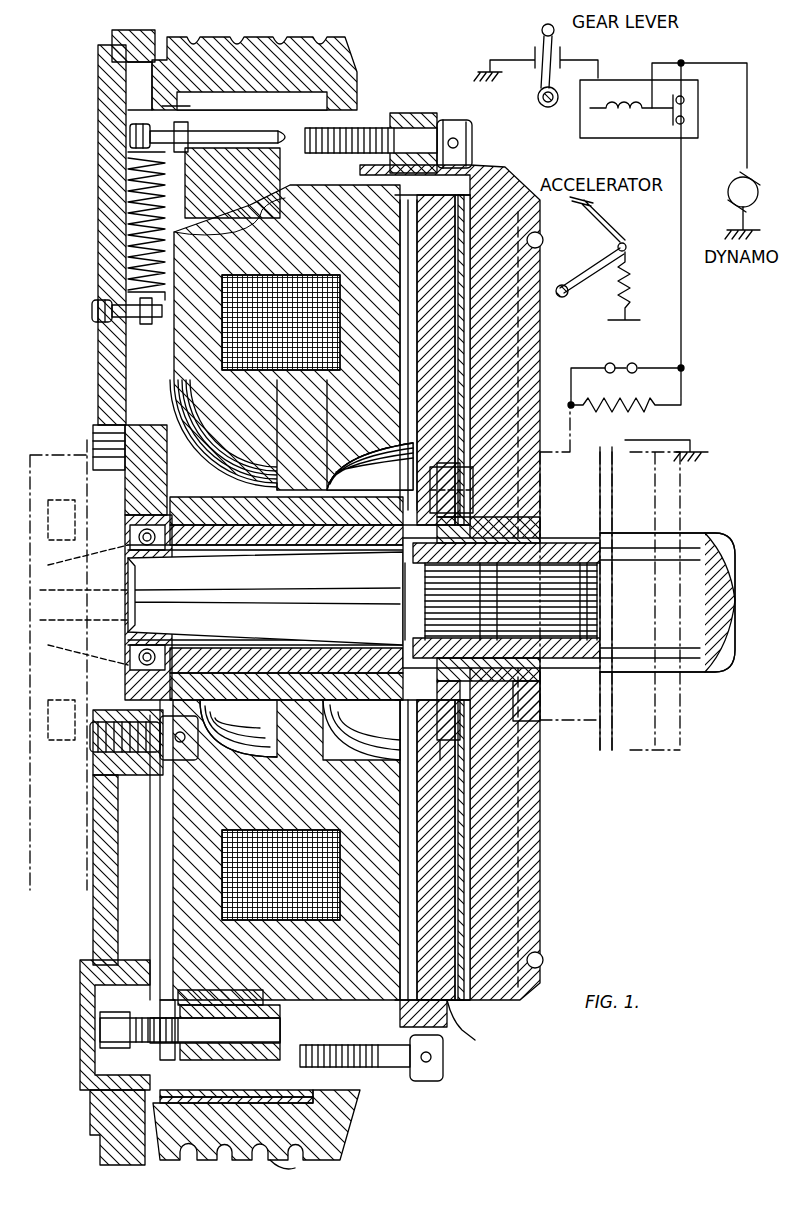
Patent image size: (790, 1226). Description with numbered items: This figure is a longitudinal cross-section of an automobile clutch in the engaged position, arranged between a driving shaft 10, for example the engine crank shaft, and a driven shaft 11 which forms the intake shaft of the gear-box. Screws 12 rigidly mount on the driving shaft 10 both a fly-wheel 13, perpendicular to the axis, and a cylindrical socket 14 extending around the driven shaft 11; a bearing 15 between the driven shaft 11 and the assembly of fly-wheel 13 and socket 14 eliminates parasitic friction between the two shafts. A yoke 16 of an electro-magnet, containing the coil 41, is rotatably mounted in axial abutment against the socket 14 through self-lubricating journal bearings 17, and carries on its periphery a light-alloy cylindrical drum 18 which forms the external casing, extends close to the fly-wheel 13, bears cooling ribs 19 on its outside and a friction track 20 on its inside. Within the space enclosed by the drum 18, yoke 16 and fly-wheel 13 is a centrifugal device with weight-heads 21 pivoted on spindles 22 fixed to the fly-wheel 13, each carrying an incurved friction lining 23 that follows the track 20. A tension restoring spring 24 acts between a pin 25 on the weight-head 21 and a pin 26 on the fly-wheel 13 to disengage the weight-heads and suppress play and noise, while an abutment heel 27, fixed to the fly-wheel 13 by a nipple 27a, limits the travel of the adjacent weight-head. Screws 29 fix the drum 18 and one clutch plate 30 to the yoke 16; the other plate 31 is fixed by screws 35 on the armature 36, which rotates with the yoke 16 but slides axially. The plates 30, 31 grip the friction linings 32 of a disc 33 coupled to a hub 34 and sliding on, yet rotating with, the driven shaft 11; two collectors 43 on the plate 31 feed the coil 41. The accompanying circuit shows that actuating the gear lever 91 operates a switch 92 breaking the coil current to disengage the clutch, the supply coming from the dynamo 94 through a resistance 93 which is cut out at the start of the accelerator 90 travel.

The driving shaft 10 is at (34, 458).
The driven shaft 11 is at (682, 570).
The screws 12 is at (90, 740).
The fly-wheel 13 is at (98, 187).
The cylindrical socket 14 is at (250, 660).
The bearing 15 is at (135, 530).
The yoke 16 is at (192, 265).
The self-lubricating journal bearings 17 is at (272, 520).
The cylindrical drum 18 is at (330, 1136).
The cooling ribs 19 is at (293, 1171).
The friction track 20 is at (352, 96).
The weight-heads 21 is at (240, 193).
The spindles 22 is at (268, 1041).
The friction lining 23 is at (190, 106).
The restoring spring 24 is at (128, 228).
The pin 25 is at (130, 137).
The pin 26 is at (92, 312).
The abutment heel 27 is at (165, 1000).
The nipple 27a is at (125, 1002).
The screws 29 is at (390, 1085).
The plate 30 is at (428, 395).
The plate 31 is at (500, 322).
The friction lining 32 is at (476, 1025).
The disc 33 is at (445, 778).
The hub 34 is at (525, 680).
The screws 35 is at (410, 135).
The armature 36 is at (400, 392).
The coil 41 is at (300, 329).
The collectors 43 is at (572, 495).
The accelerator 90 is at (600, 236).
The gear lever 91 is at (540, 50).
The switch 92 is at (625, 112).
The resistance 93 is at (622, 410).
The dynamo 94 is at (756, 204).